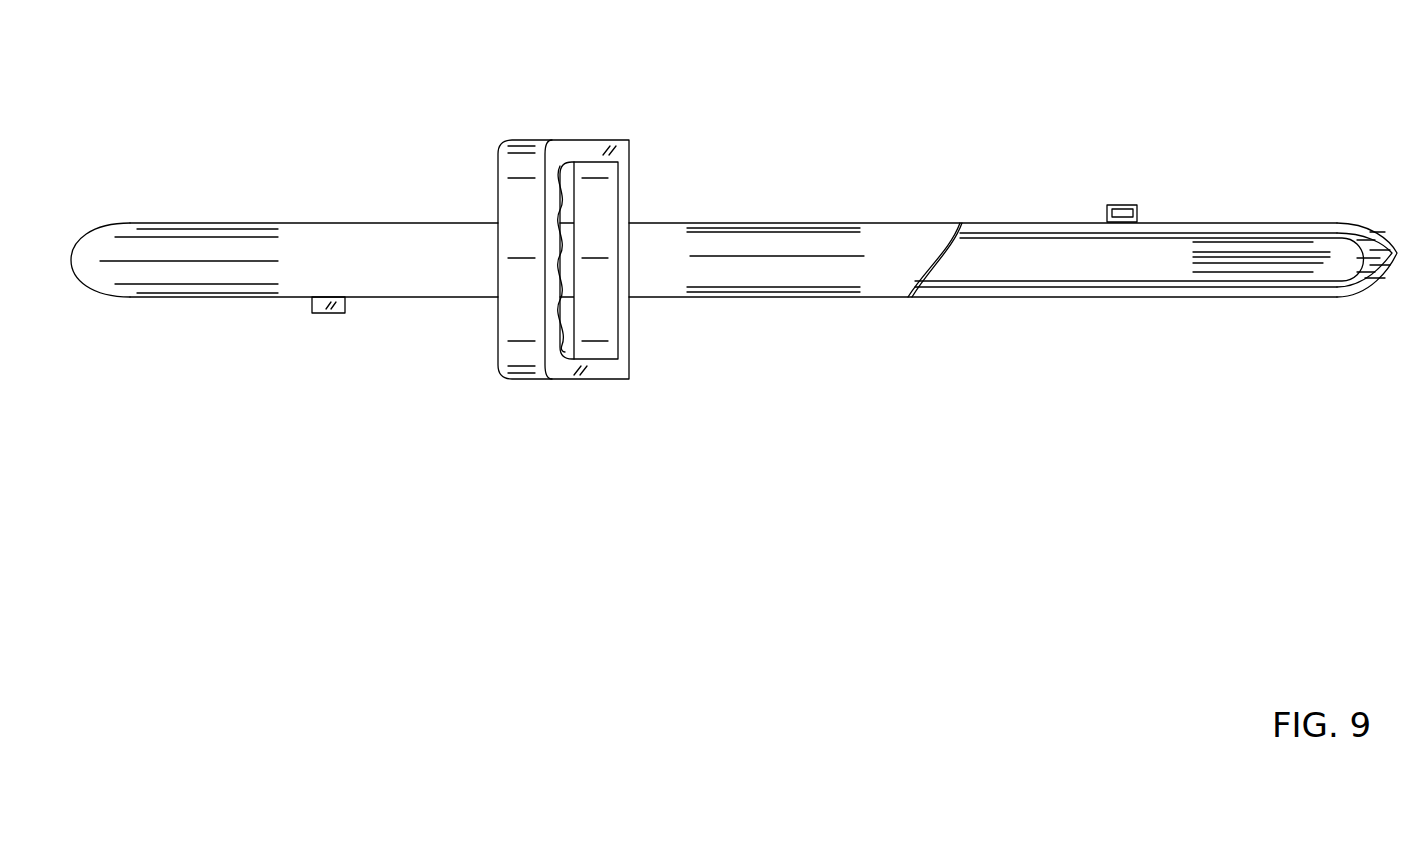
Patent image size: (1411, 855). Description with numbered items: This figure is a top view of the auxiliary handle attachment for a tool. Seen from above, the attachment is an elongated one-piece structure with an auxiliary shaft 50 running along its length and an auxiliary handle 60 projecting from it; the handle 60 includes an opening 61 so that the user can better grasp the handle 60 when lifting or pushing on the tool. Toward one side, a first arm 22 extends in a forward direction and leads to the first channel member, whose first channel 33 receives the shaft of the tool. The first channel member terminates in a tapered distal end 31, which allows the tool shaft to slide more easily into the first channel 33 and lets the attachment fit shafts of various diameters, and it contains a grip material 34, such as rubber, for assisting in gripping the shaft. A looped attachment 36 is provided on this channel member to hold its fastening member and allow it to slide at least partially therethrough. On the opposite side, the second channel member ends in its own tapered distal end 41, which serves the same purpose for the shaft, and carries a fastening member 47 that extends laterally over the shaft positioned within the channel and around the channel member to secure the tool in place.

The first arm 22 is at (960, 224).
The tapered distal end 31 is at (1357, 303).
The first channel 33 is at (1397, 250).
The grip material 34 is at (1053, 263).
The looped attachment 36 is at (1123, 205).
The tapered distal end 41 is at (88, 291).
The fastening member 47 is at (343, 302).
The auxiliary shaft 50 is at (710, 297).
The auxiliary handle 60 is at (522, 140).
The opening 61 is at (565, 345).